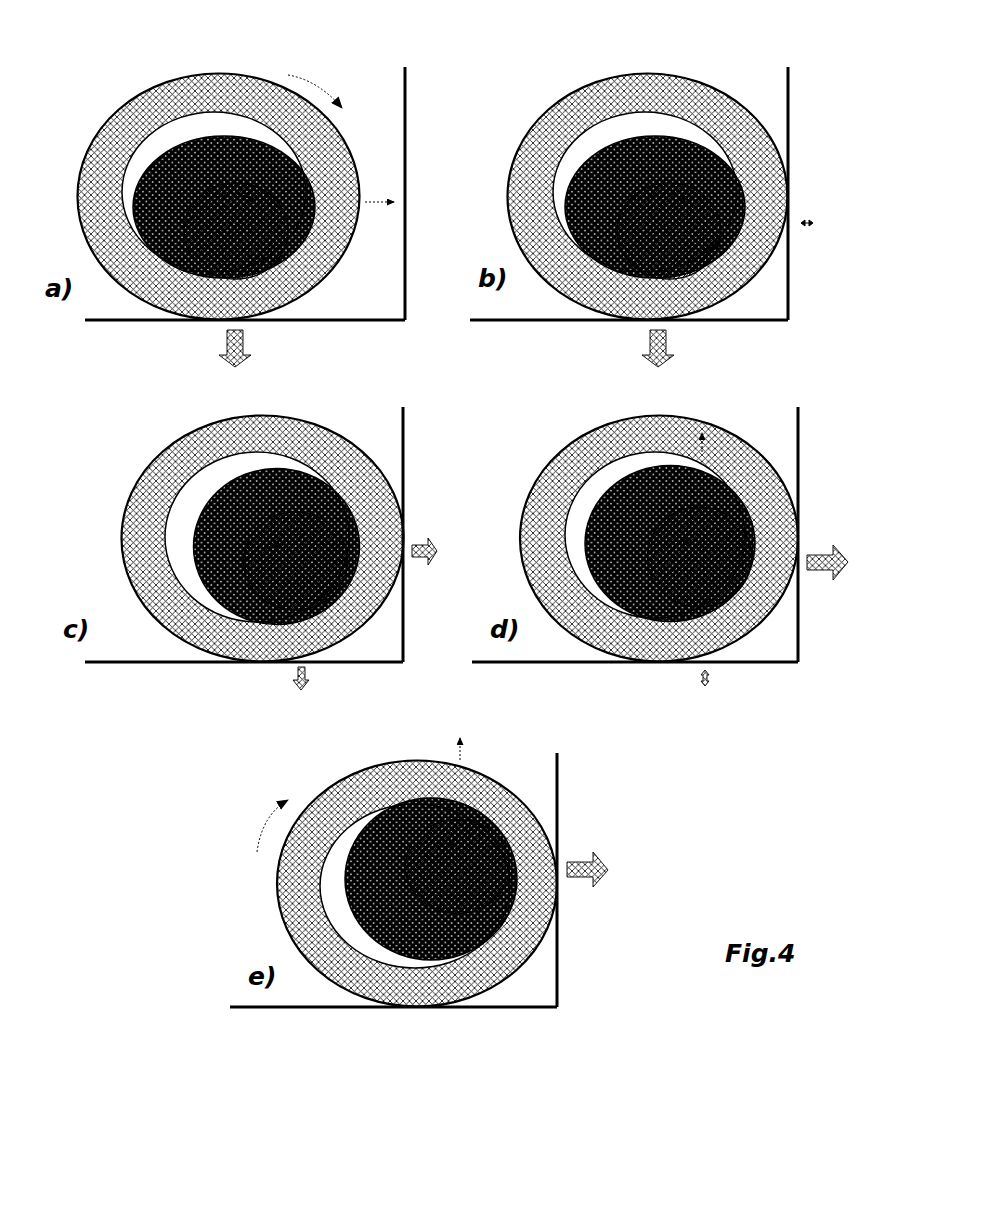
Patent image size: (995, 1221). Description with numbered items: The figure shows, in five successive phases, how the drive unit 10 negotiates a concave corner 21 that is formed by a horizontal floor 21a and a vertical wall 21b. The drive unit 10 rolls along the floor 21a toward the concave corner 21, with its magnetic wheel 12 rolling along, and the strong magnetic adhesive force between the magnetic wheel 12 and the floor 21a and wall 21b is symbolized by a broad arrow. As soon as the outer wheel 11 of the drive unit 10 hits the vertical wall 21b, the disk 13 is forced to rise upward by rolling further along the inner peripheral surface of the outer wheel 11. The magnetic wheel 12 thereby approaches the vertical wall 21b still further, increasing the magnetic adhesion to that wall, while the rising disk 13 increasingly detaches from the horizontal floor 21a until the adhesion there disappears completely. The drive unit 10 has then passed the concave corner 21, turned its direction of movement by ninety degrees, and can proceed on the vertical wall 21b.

The drive unit 10 is at (422, 520).
The outer wheel 11 is at (180, 92).
The magnetic wheel 12 is at (230, 138).
The disk 13 is at (247, 247).
The concave corner 21 is at (484, 568).
The horizontal floor 21a is at (325, 323).
The vertical wall 21b is at (407, 137).